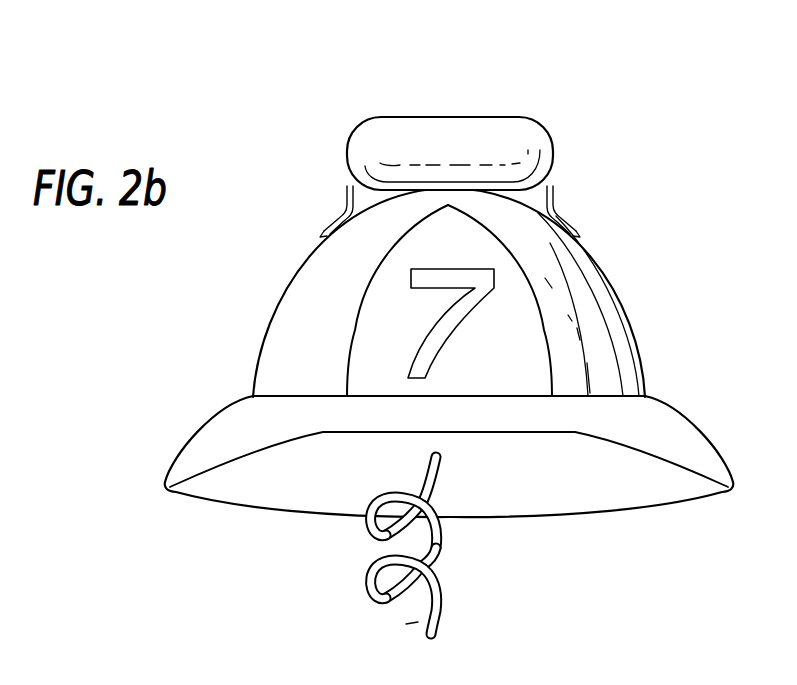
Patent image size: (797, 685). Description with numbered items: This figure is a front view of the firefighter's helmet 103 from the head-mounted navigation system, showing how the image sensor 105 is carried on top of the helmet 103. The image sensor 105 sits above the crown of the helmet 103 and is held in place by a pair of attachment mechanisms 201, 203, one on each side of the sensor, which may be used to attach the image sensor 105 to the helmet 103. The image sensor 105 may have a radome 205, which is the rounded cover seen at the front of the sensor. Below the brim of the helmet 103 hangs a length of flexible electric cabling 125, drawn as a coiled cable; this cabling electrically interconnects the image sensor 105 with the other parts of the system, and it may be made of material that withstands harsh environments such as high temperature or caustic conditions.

The helmet 103 is at (607, 295).
The image sensor 105 is at (448, 117).
The flexible electric cabling 125 is at (363, 582).
The attachment mechanism 201 is at (345, 185).
The attachment mechanism 203 is at (553, 186).
The radome 205 is at (424, 149).